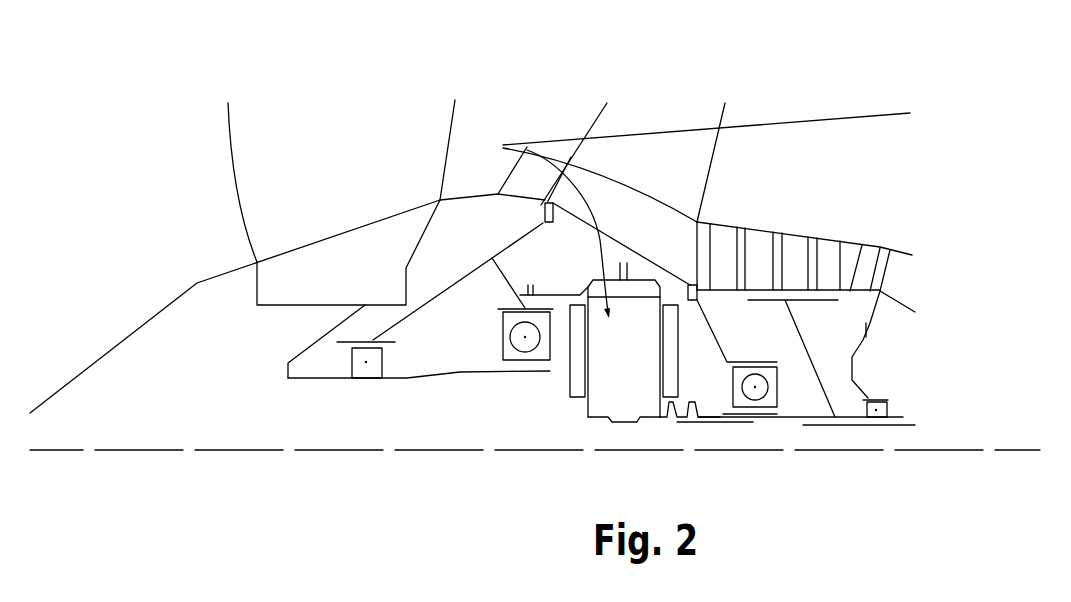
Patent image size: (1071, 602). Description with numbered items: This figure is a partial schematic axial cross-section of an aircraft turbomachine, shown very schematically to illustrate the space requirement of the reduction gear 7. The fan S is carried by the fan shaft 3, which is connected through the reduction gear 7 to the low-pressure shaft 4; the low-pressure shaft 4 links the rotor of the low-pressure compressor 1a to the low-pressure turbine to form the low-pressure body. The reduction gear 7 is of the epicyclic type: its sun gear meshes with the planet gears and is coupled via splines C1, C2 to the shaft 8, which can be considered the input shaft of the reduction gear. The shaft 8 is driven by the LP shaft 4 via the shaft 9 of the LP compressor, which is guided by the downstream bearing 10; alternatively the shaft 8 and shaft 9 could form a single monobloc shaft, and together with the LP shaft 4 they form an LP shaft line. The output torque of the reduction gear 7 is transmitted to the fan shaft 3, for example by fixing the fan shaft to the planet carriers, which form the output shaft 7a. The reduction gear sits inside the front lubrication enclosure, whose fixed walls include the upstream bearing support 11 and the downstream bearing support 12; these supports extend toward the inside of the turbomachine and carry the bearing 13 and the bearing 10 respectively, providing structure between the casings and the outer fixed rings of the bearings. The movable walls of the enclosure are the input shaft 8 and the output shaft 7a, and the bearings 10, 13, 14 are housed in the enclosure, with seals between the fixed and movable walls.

The fan S is at (287, 171).
The reduction gear 7 is at (527, 147).
The upstream bearing support 11 is at (462, 279).
The low-pressure compressor 1a is at (797, 234).
The downstream bearing support 12 is at (712, 333).
The fan shaft 3 is at (305, 353).
The bearing 14 is at (358, 385).
The bearing 13 is at (502, 340).
The output shaft 7a is at (565, 330).
The spline C1 is at (622, 425).
The spline C2 is at (620, 400).
The shaft 8 is at (696, 426).
The shaft of the LP compressor 9 is at (787, 415).
The downstream bearing 10 is at (785, 395).
The low-pressure shaft 4 is at (898, 426).